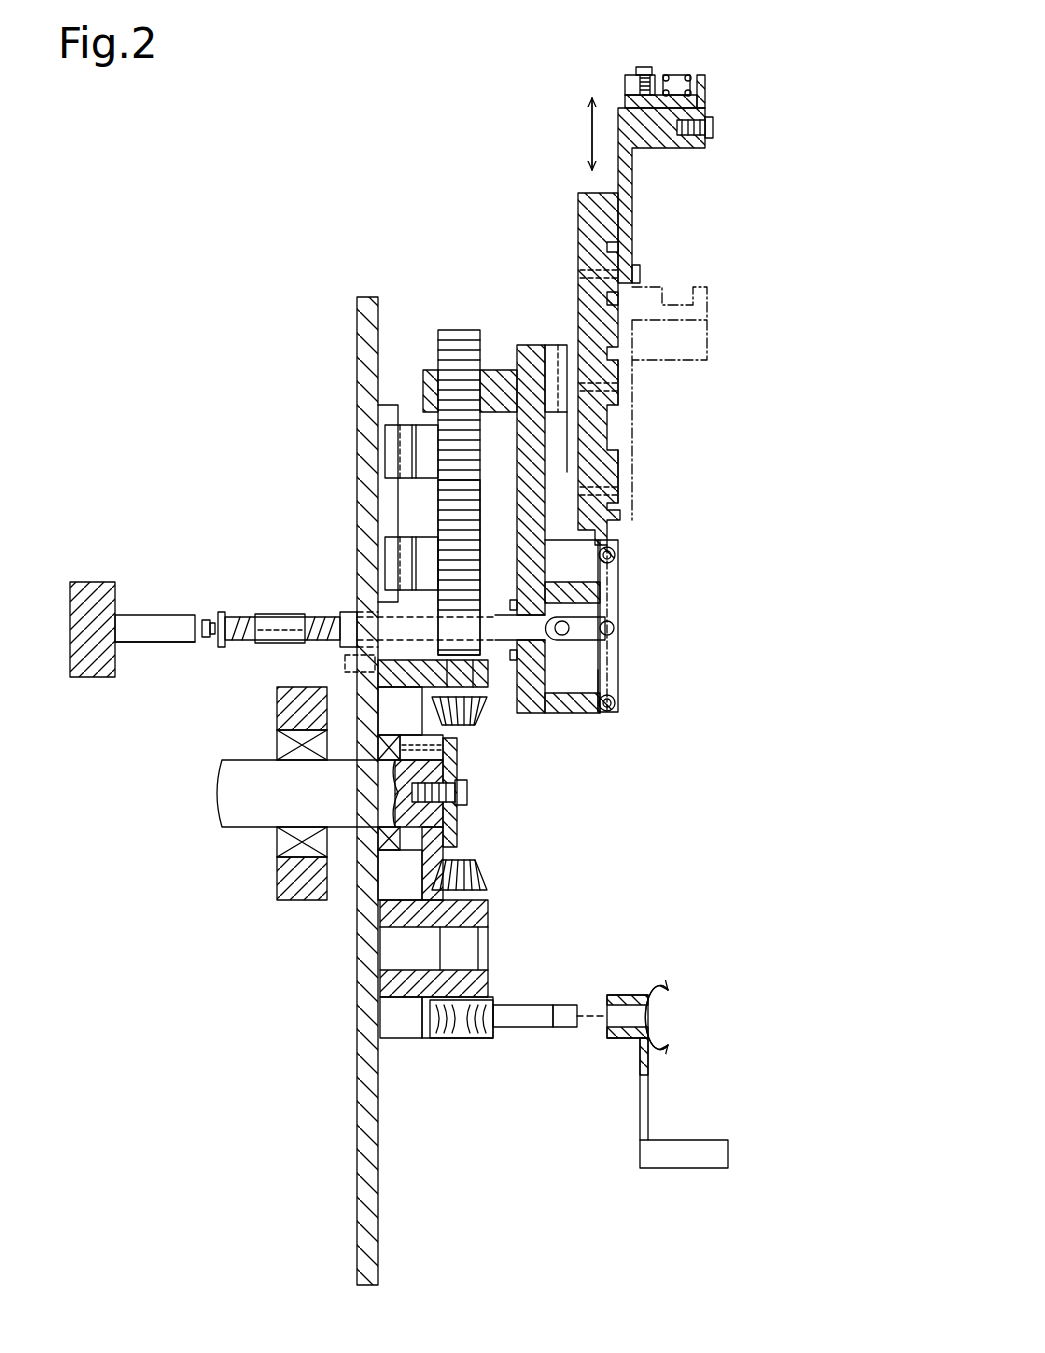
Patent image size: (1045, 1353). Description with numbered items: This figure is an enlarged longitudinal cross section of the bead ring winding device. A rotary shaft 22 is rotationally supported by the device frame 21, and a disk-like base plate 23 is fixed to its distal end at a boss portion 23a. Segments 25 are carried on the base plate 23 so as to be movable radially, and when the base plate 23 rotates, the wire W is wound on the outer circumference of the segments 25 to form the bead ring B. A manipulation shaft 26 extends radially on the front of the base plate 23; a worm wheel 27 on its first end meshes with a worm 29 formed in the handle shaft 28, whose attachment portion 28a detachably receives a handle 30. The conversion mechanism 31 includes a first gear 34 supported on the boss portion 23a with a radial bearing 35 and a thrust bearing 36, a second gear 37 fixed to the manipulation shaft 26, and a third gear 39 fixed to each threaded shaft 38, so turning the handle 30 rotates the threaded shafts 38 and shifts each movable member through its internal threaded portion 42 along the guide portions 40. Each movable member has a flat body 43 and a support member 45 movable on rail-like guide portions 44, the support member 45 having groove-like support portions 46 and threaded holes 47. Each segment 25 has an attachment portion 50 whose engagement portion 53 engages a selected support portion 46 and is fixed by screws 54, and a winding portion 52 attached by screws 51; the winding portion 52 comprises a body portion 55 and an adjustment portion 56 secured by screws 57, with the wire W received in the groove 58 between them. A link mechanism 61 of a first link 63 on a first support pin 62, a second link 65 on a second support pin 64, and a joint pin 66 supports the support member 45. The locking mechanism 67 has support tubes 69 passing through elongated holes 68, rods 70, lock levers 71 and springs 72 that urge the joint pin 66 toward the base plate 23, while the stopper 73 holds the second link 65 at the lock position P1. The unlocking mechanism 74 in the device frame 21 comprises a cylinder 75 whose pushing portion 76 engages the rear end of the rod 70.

The device frame 21 is at (114, 583).
The rotary shaft 22 is at (246, 822).
The base plate 23 is at (357, 318).
The boss portion 23a is at (458, 838).
The segment 25 is at (708, 74).
The manipulation shaft 26 is at (473, 943).
The worm wheel 27 is at (445, 1040).
The handle shaft 28 is at (527, 1028).
The attachment portion 28a is at (565, 1028).
The worm 29 is at (478, 1040).
The handle 30 is at (625, 995).
The conversion mechanism 31 is at (446, 328).
The first gear 34 is at (420, 728).
The radial bearing 35 is at (413, 858).
The thrust bearing 36 is at (395, 822).
The second gear 37 is at (488, 878).
The threaded shaft 38 is at (446, 522).
The third gear 39 is at (487, 708).
The guide portion 40 is at (389, 405).
The internal threaded portion 42 is at (430, 371).
The body 43 is at (525, 345).
The guide portion 44 is at (553, 445).
The support member 45 is at (578, 243).
The support portion 46 is at (621, 362).
The threaded hole 47 is at (618, 250).
The attachment portion 50 is at (657, 148).
The screw 51 is at (714, 128).
The winding portion 52 is at (572, 42).
The engagement portion 53 is at (605, 300).
The screw 54 is at (641, 272).
The body portion 55 is at (625, 100).
The adjustment portion 56 is at (627, 78).
The screw 57 is at (640, 67).
The groove 58 is at (706, 88).
The link mechanism 61 is at (619, 573).
The first support pin 62 is at (616, 706).
The first link 63 is at (619, 680).
The second support pin 64 is at (616, 553).
The second link 65 is at (614, 605).
The joint pin 66 is at (618, 630).
The locking mechanism 67 is at (277, 617).
The elongated hole 68 is at (360, 662).
The support tube 69 is at (345, 613).
The rod 70 is at (280, 643).
The lock lever 71 is at (580, 642).
The spring 72 is at (226, 648).
The stopper 73 is at (573, 582).
The unlocking mechanism 74 is at (180, 615).
The cylinder 75 is at (150, 642).
The pushing portion 76 is at (206, 640).
The wire W is at (667, 75).
The bead ring B is at (690, 76).
The lock position P1 is at (612, 652).